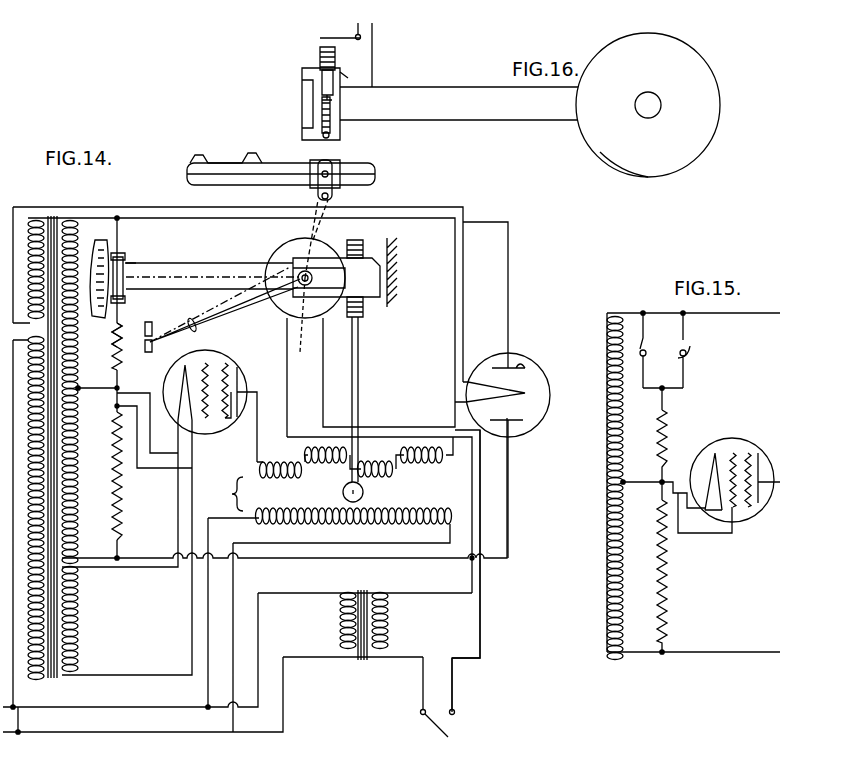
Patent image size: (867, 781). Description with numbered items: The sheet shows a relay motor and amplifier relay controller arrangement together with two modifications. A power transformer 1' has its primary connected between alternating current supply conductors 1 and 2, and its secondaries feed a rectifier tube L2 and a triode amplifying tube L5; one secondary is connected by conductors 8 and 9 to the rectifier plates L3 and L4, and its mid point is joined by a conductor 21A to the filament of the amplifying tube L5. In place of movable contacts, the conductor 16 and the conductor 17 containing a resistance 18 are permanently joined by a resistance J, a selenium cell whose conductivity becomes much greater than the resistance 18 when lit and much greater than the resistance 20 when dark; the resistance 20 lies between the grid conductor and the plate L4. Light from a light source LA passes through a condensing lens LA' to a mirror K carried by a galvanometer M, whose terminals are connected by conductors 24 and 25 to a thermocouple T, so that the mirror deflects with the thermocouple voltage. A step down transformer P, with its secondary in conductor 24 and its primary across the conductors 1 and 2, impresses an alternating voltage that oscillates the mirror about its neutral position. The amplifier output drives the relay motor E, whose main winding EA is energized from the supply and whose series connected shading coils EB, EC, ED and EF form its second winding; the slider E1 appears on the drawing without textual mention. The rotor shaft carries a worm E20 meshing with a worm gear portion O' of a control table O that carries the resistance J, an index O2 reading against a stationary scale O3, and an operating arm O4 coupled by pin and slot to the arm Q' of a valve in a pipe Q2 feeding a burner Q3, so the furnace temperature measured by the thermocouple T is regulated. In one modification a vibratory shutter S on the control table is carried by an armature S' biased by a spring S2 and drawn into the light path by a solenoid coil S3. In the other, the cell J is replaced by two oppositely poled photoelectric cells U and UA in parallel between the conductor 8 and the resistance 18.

In FIG. 14, the power transformer 1' is at (53, 429).
In FIG. 15, the power transformer 1' is at (608, 472).
In FIG. 14, the stationary scale O3 is at (100, 240).
In FIG. 14, the conductor 16 is at (120, 222).
In FIG. 14, the index O2 is at (124, 262).
In FIG. 14, the resistance (selenium cell) J is at (128, 272).
In FIG. 14, the control table O is at (213, 260).
In FIG. 16, the control table O is at (459, 86).
In FIG. 14, the mirror K is at (284, 248).
In FIG. 14, the worm gear portion O' is at (303, 325).
In FIG. 16, the worm gear portion O' is at (624, 178).
In FIG. 14, the operating arm O4 is at (325, 232).
In FIG. 14, the worm E20 is at (365, 310).
In FIG. 14, the galvanometer M is at (388, 240).
In FIG. 14, the operating arm of control valve Q' is at (341, 182).
In FIG. 14, the burner Q3 is at (207, 158).
In FIG. 14, the pipe Q2 is at (275, 168).
In FIG. 14, the solenoid coil S3 is at (322, 48).
In FIG. 14, the vibratory shutter S is at (307, 74).
In FIG. 14, the armature S' is at (359, 53).
In FIG. 14, the spring S2 is at (333, 120).
In FIG. 14, the conductor 17 is at (120, 331).
In FIG. 14, the resistance 18 is at (112, 350).
In FIG. 15, the resistance 18 is at (668, 426).
In FIG. 14, the conductor 21A is at (108, 392).
In FIG. 15, the conductor 21A is at (636, 482).
In FIG. 14, the resistance 20 is at (122, 497).
In FIG. 15, the resistance 20 is at (672, 575).
In FIG. 14, the light source LA is at (161, 343).
In FIG. 14, the condensing lens LA' is at (225, 310).
In FIG. 14, the triode amplifying tube L5 is at (215, 435).
In FIG. 15, the triode amplifying tube L5 is at (748, 510).
In FIG. 14, the relay motor E is at (230, 494).
In FIG. 14, the shading coil EB is at (283, 459).
In FIG. 14, the shading coil EC is at (330, 465).
In FIG. 14, the shading coil ED is at (385, 478).
In FIG. 14, the shading coil EF is at (435, 464).
In FIG. 14, the slider contact E1 is at (343, 492).
In FIG. 14, the main winding EA is at (398, 527).
In FIG. 14, the conductor 24 is at (473, 573).
In FIG. 14, the conductor 25 is at (481, 603).
In FIG. 14, the step down transformer P is at (372, 660).
In FIG. 14, the thermocouple T is at (450, 733).
In FIG. 14, the rectifier tube plate L3 is at (518, 366).
In FIG. 14, the rectifier tube plate L4 is at (527, 402).
In FIG. 14, the rectifier tube L2 is at (524, 433).
In FIG. 14, the alternating current supply conductor 1 is at (130, 682).
In FIG. 14, the alternating current supply conductor 2 is at (150, 733).
In FIG. 15, the conductor 8 is at (748, 313).
In FIG. 15, the conductor 9 is at (728, 652).
In FIG. 15, the photoelectric cell UA is at (641, 336).
In FIG. 15, the photoelectric cell U is at (690, 350).